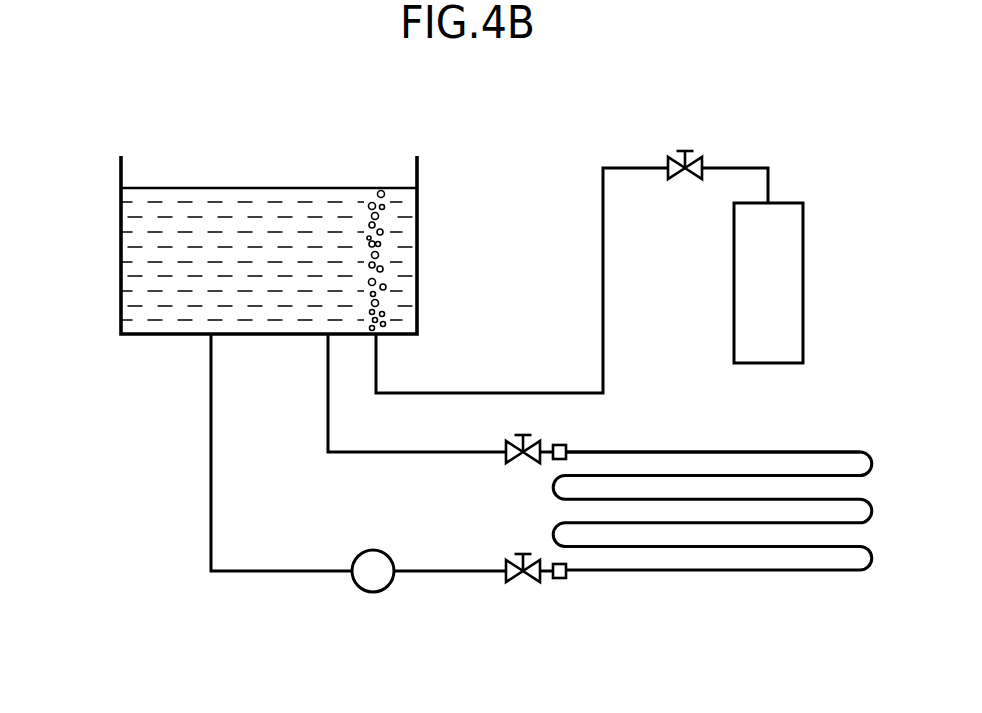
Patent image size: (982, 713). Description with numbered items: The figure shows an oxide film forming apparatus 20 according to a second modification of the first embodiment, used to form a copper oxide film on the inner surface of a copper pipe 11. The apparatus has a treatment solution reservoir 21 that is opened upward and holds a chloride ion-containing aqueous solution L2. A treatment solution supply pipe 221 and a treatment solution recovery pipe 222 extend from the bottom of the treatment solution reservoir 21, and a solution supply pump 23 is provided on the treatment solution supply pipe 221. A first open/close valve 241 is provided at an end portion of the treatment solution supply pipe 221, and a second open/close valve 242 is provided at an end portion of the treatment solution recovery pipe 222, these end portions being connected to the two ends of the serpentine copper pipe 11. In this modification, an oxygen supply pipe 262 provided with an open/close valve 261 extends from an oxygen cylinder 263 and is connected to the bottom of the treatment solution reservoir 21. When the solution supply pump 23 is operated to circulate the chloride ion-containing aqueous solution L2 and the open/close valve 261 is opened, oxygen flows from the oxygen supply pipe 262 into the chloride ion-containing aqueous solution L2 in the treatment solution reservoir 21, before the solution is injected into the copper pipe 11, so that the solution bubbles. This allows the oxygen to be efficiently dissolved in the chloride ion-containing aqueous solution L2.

The treatment solution reservoir 21 is at (121, 251).
The chloride ion-containing aqueous solution L2 is at (257, 200).
The oxide film forming apparatus 20 is at (497, 296).
The treatment solution supply pipe 221 is at (268, 573).
The solution supply pump 23 is at (373, 592).
The first open/close valve 241 is at (520, 585).
The treatment solution recovery pipe 222 is at (403, 453).
The second open/close valve 242 is at (520, 465).
The copper pipe 11 is at (760, 452).
The oxygen supply pipe 262 is at (603, 322).
The open/close valve 261 is at (683, 180).
The oxygen cylinder 263 is at (797, 283).